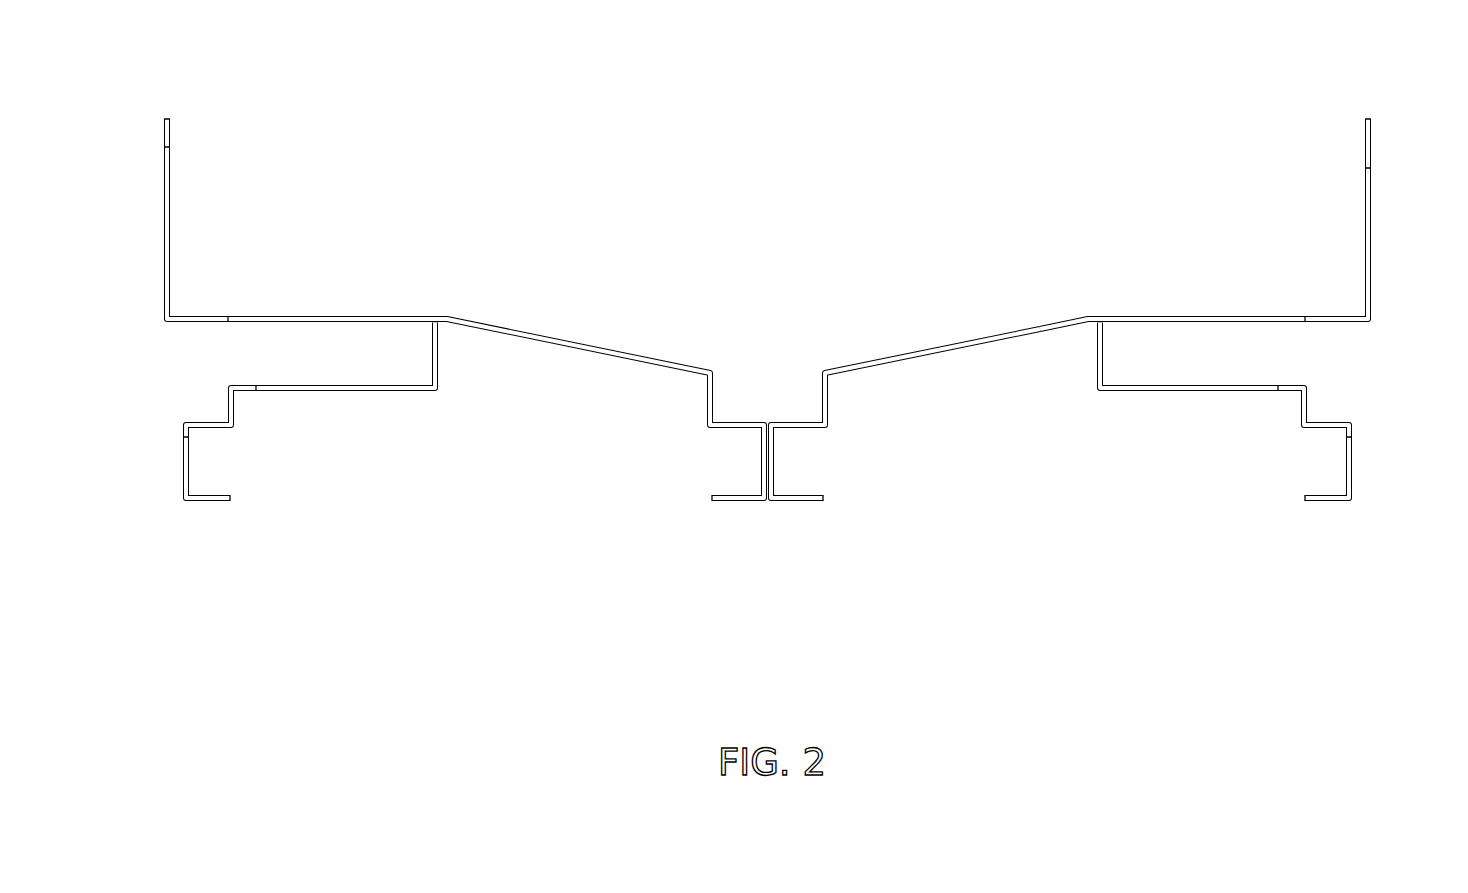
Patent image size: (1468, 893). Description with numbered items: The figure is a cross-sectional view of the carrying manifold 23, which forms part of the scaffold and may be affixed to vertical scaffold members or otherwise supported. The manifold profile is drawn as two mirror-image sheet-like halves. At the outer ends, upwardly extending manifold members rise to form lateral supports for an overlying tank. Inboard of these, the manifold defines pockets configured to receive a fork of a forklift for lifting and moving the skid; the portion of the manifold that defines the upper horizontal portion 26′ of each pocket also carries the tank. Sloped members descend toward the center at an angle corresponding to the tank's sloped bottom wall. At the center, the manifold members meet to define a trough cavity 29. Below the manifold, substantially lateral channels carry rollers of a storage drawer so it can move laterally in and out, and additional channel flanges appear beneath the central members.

The carrying manifold 23 is at (1234, 88).
The upper horizontal portion 26′ is at (1248, 316).
The trough cavity 29 is at (767, 405).